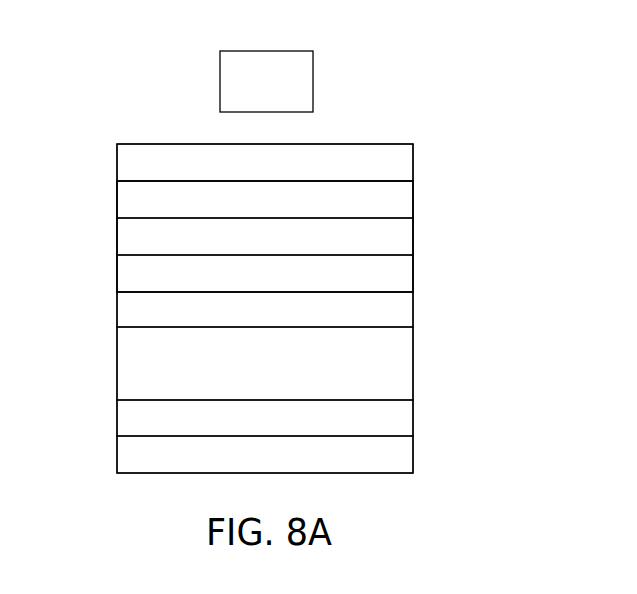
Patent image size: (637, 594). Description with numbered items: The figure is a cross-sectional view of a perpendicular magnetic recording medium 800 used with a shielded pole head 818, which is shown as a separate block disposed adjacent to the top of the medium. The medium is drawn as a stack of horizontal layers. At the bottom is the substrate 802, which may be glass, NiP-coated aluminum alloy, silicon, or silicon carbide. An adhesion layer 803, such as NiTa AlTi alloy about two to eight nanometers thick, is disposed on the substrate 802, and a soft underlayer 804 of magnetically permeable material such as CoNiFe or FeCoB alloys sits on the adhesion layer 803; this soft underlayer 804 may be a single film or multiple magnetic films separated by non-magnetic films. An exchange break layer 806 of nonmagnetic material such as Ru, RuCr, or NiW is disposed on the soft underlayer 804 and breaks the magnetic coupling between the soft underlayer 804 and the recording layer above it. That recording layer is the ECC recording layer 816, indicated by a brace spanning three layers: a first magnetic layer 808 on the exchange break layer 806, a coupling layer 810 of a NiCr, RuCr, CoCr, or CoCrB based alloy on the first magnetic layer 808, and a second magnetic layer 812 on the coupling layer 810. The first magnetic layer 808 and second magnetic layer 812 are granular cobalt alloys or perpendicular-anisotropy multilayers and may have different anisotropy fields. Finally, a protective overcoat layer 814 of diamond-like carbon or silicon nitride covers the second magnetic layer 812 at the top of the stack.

The perpendicular magnetic recording medium 800 is at (148, 110).
The substrate 802 is at (283, 467).
The adhesion layer 803 is at (283, 428).
The soft underlayer 804 is at (283, 369).
The exchange break layer 806 is at (283, 320).
The first magnetic layer 808 is at (283, 285).
The coupling layer 810 is at (283, 248).
The second magnetic layer 812 is at (283, 213).
The protective overcoat layer 814 is at (283, 173).
The ECC recording layer 816 is at (427, 181).
The shielded pole head 818 is at (283, 92).